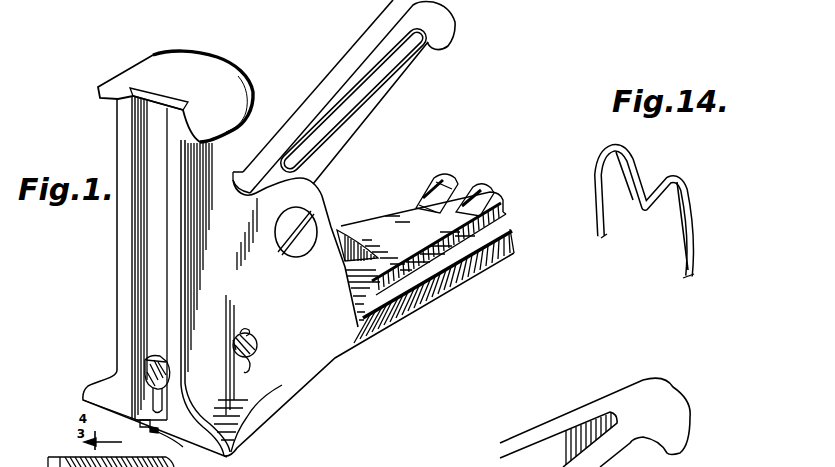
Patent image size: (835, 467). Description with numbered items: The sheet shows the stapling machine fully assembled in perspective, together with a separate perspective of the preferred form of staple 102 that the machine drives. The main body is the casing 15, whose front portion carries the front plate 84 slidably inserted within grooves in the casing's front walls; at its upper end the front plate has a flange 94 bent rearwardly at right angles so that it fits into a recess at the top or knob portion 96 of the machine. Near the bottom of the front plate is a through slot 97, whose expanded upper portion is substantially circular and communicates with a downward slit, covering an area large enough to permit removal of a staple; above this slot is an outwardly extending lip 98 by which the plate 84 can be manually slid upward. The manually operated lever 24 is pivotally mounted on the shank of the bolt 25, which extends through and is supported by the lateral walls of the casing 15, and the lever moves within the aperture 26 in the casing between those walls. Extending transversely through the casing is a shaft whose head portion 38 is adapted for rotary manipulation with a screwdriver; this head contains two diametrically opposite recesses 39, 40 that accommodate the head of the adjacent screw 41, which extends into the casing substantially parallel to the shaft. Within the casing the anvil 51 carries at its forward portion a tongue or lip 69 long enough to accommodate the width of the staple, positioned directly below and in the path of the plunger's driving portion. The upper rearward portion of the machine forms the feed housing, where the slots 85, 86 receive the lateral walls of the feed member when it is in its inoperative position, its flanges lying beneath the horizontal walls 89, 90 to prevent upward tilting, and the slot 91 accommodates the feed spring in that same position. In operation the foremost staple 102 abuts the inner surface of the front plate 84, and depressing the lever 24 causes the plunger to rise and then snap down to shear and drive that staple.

In FIG. 1, the knob portion 96 is at (241, 74).
In FIG. 1, the flange 94 is at (143, 92).
In FIG. 1, the manually operated lever 24 is at (327, 78).
In FIG. 1, the aperture 26 is at (238, 172).
In FIG. 1, the bolt 25 is at (298, 211).
In FIG. 1, the horizontal wall 90 is at (428, 178).
In FIG. 1, the slot 86 is at (441, 178).
In FIG. 1, the slot 91 is at (465, 186).
In FIG. 1, the slot 85 is at (493, 193).
In FIG. 1, the horizontal wall 89 is at (504, 207).
In FIG. 1, the front plate 84 is at (145, 268).
In FIG. 1, the casing 15 is at (118, 318).
In FIG. 1, the lip 98 is at (145, 360).
In FIG. 1, the through slot 97 is at (160, 401).
In FIG. 1, the anvil 51 is at (145, 425).
In FIG. 1, the tongue or lip 69 is at (183, 447).
In FIG. 1, the screw 41 is at (240, 329).
In FIG. 1, the head portion 38 is at (253, 337).
In FIG. 1, the recess 39 is at (233, 345).
In FIG. 1, the recess 40 is at (248, 362).
In FIG. 14, the staple 102 is at (696, 221).